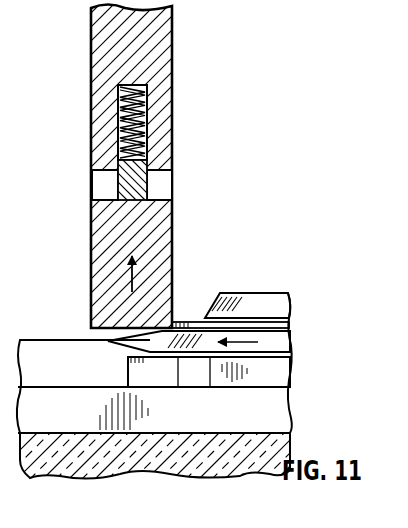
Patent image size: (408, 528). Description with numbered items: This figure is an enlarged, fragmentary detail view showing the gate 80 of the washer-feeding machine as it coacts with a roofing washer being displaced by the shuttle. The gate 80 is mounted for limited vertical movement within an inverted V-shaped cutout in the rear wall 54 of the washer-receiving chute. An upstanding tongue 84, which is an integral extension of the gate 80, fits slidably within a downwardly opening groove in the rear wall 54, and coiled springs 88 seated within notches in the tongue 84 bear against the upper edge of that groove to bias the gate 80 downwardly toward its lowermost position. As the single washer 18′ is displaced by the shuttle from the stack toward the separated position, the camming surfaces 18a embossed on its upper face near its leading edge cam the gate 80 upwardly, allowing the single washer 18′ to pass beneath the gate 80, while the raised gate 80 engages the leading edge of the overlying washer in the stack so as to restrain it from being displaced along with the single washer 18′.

The rear wall 54 is at (164, 61).
The coiled springs 88 is at (150, 103).
The upstanding tongue 84 is at (133, 190).
The gate 80 is at (136, 231).
The camming surfaces 18a is at (156, 336).
The single washer 18′ is at (181, 365).